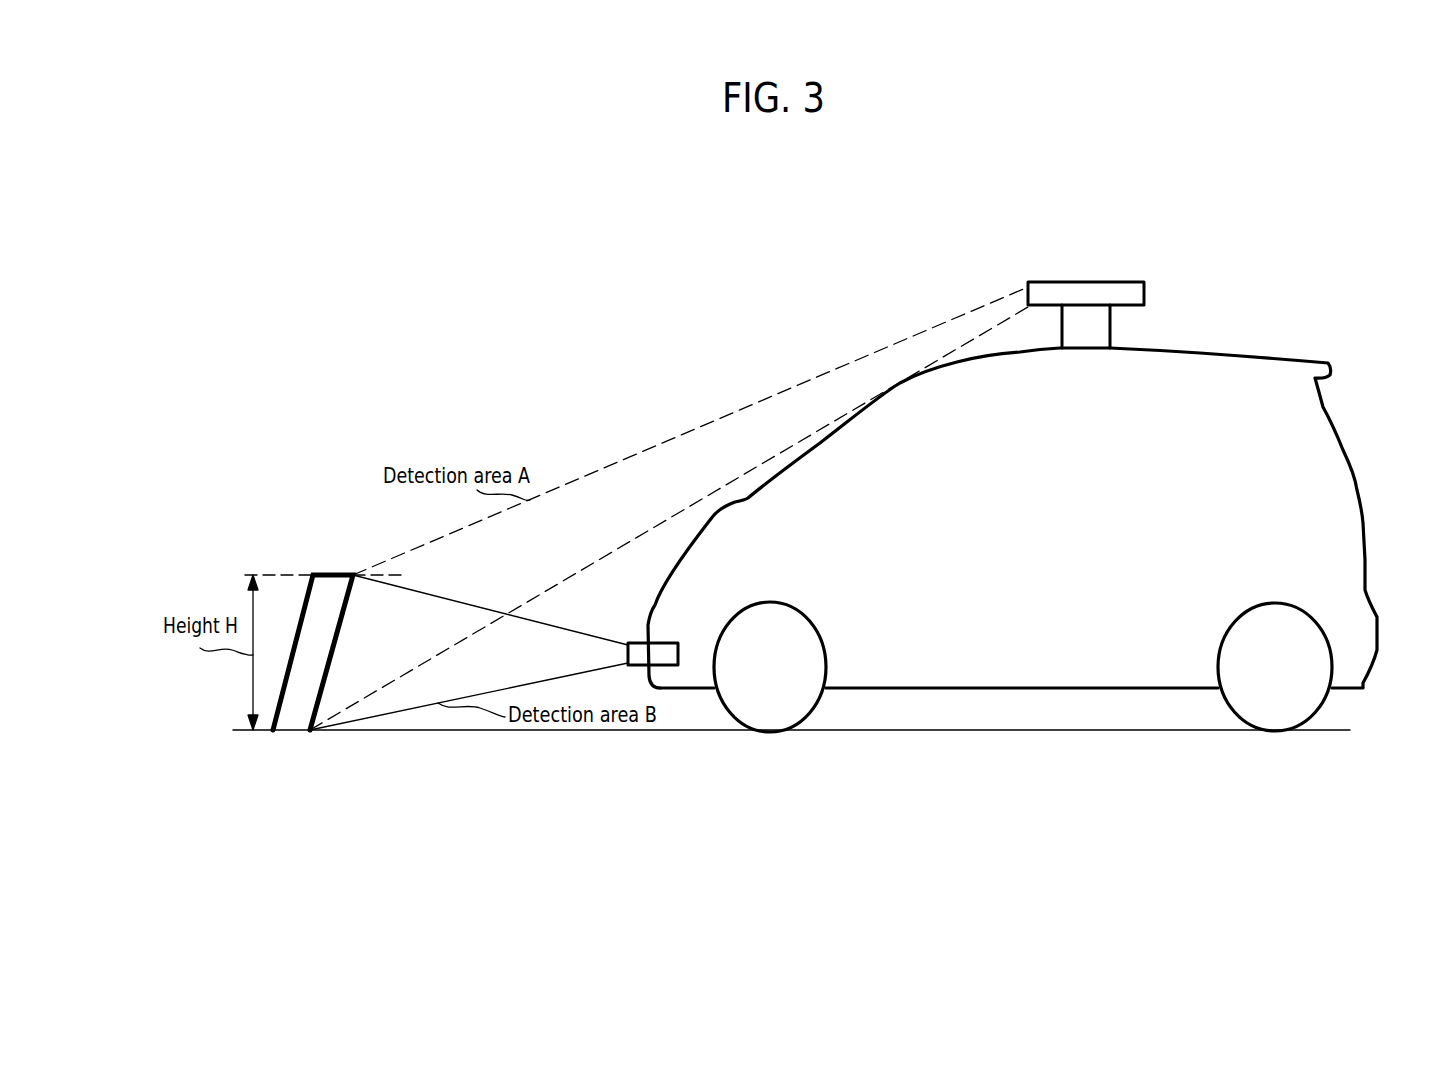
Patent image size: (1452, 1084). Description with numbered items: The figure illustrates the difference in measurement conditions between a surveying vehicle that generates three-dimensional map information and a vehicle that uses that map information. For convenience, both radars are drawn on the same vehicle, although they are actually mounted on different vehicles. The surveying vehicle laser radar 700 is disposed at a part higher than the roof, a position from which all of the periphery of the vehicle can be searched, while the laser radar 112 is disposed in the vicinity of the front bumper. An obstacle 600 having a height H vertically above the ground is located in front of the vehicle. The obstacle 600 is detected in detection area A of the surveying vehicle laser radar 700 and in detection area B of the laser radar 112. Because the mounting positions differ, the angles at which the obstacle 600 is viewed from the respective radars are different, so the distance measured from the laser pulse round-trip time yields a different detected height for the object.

The laser radar 112 is at (683, 640).
The obstacle 600 is at (290, 717).
The surveying vehicle laser radar 700 is at (1092, 282).